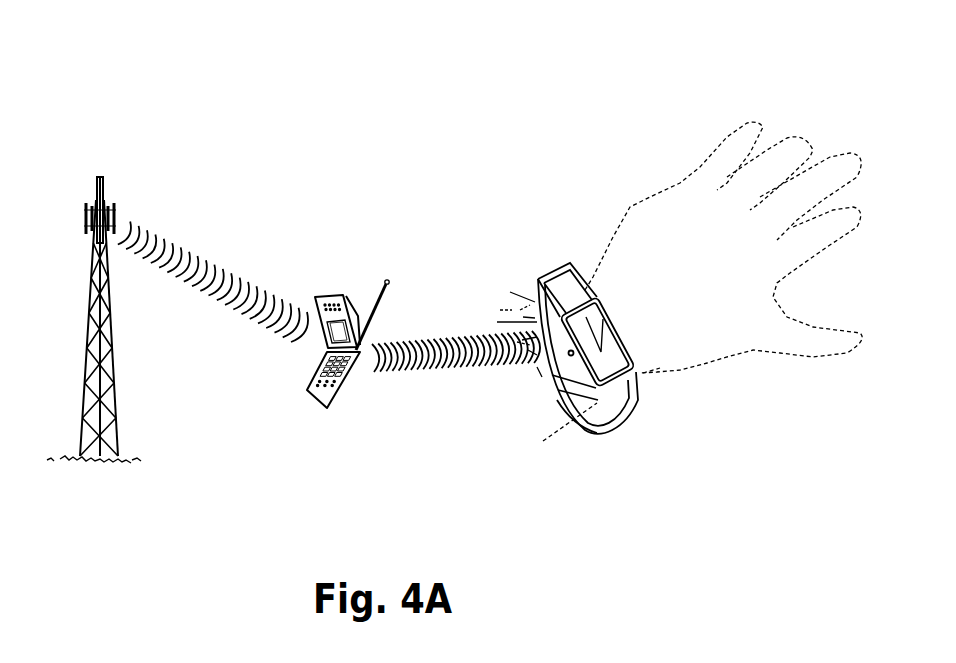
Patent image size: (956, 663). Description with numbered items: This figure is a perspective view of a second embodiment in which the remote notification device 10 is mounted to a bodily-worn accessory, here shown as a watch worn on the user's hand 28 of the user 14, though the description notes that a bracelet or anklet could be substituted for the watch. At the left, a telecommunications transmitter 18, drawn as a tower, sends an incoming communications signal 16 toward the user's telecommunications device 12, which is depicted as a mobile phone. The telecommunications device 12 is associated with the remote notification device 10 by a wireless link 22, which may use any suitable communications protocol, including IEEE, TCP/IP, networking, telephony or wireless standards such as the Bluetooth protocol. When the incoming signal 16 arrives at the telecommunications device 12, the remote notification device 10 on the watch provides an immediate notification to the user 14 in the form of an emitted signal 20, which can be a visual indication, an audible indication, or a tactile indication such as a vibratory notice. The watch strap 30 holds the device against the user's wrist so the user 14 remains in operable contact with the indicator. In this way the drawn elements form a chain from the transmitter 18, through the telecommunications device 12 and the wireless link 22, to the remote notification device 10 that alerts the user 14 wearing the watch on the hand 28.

The remote notification device 10 is at (552, 337).
The telecommunications device 12 is at (337, 293).
The user 14 is at (763, 123).
The incoming communications signal 16 is at (193, 251).
The telecommunications transmitter 18 is at (92, 279).
The emitted signal 20 is at (525, 252).
The wireless link 22 is at (406, 340).
The user's hand 28 is at (703, 350).
The watch strap 30 is at (560, 427).